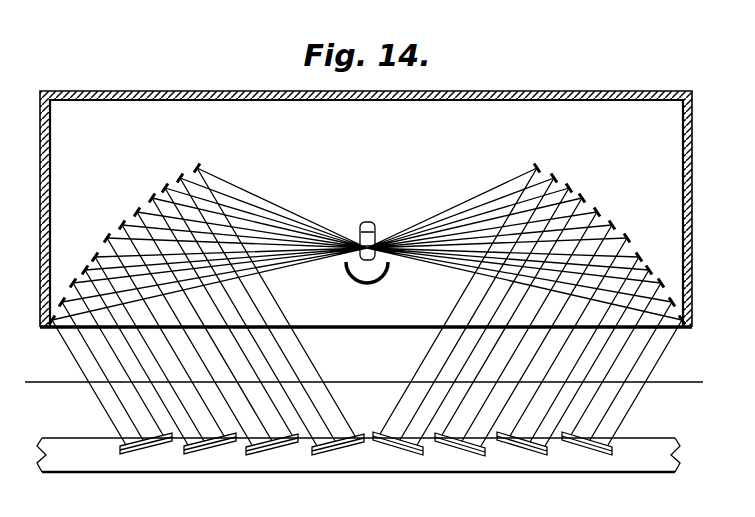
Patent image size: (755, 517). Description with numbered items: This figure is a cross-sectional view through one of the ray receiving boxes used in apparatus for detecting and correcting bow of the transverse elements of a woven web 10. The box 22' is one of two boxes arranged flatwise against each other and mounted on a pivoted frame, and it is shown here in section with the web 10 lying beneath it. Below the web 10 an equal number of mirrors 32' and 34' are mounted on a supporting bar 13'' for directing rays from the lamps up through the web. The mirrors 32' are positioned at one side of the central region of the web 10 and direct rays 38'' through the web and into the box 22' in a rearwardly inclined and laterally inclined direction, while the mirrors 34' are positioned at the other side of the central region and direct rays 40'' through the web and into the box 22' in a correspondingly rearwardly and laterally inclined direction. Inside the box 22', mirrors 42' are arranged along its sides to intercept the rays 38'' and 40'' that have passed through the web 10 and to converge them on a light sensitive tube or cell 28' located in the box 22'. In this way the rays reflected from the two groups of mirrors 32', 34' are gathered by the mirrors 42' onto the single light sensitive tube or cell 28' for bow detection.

The ray receiving box 22' is at (366, 195).
The mirrors 42' is at (367, 244).
The light sensitive tube or cell 28' is at (378, 232).
The rays 38'' is at (209, 244).
The rays 40'' is at (524, 244).
The woven web 10 is at (58, 385).
The supporting bar 13'' is at (358, 472).
The mirrors 32' is at (242, 470).
The mirrors 34' is at (492, 468).